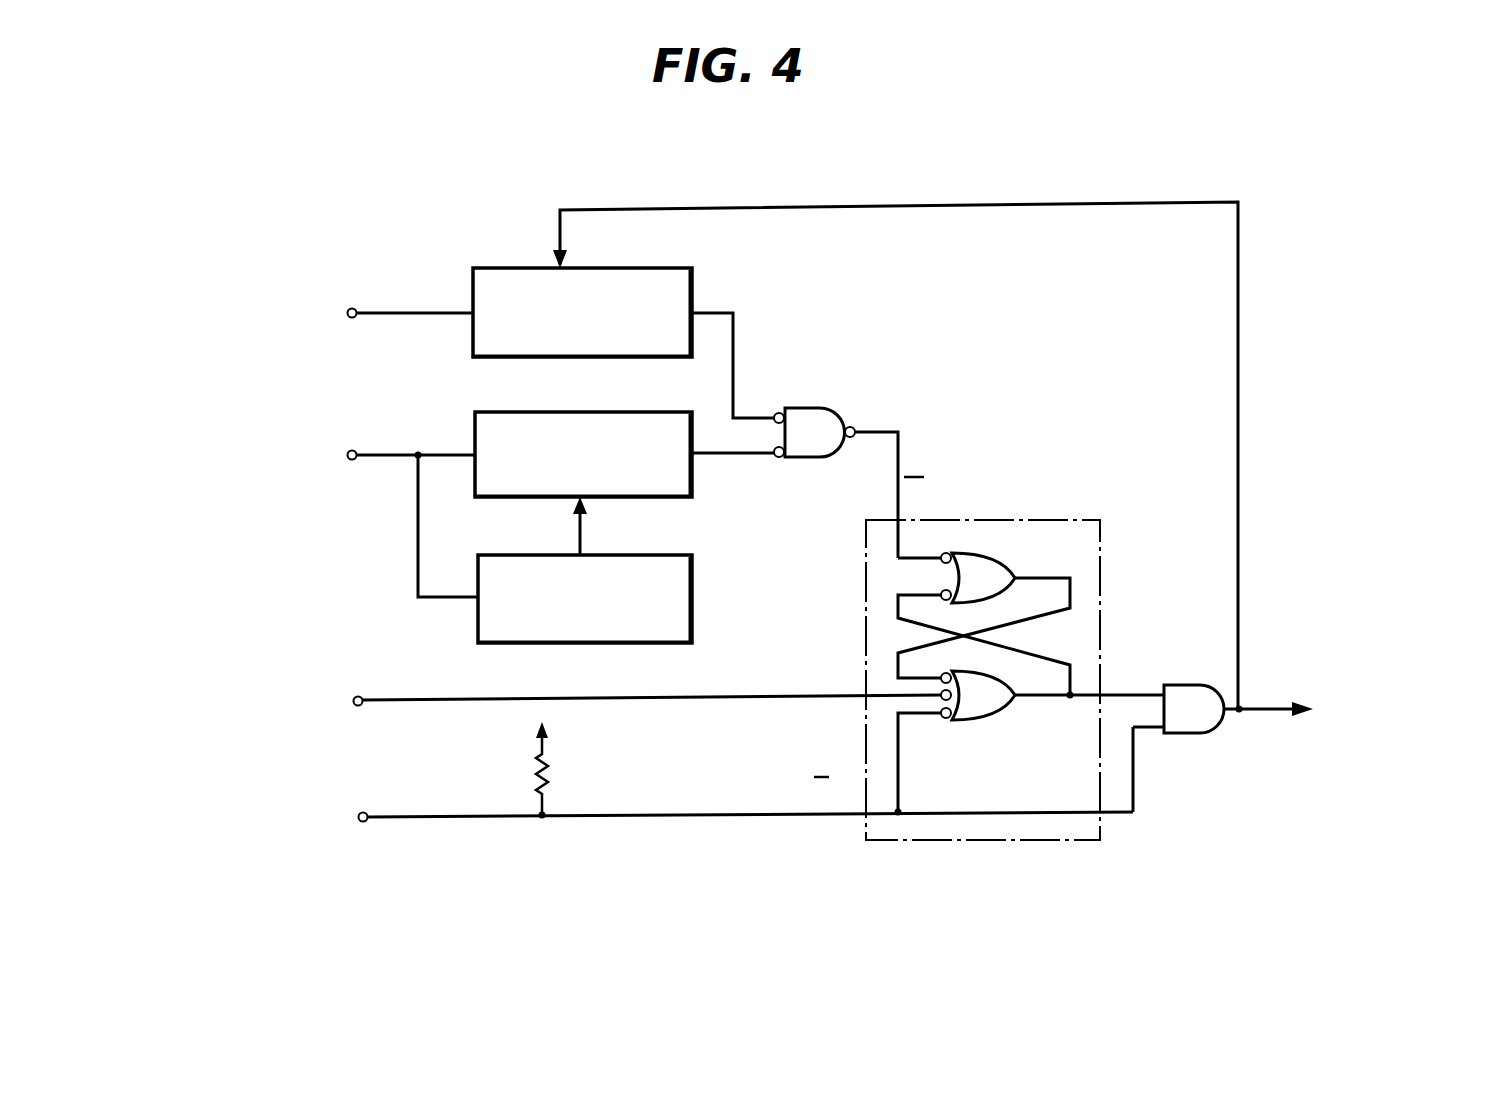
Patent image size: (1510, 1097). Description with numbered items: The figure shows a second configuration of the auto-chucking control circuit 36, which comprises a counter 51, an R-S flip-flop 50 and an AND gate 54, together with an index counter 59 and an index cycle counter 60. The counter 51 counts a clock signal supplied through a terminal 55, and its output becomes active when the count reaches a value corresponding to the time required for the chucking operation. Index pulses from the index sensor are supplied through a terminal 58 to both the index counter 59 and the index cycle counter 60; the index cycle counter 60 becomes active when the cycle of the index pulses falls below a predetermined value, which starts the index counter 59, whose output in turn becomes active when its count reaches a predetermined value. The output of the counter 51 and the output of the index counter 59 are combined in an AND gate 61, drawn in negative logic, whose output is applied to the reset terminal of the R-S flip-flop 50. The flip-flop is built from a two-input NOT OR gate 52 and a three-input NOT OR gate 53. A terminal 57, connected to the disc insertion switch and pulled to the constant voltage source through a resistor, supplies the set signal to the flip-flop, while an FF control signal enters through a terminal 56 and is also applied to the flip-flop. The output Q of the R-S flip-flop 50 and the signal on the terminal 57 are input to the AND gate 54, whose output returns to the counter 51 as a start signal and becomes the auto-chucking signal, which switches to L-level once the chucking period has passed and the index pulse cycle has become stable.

The auto-chucking control circuit 36 is at (983, 185).
The counter 51 is at (663, 275).
The terminal 55 is at (356, 309).
The terminal 58 is at (356, 451).
The index counter 59 is at (617, 410).
The index cycle counter 60 is at (680, 553).
The AND gate 61 is at (823, 408).
The R-S flip-flop 50 is at (1045, 520).
The NOT OR gate 52 is at (1003, 560).
The NOT OR gate 53 is at (993, 705).
The AND gate 54 is at (1178, 685).
The terminal 56 is at (362, 697).
The terminal 57 is at (367, 813).